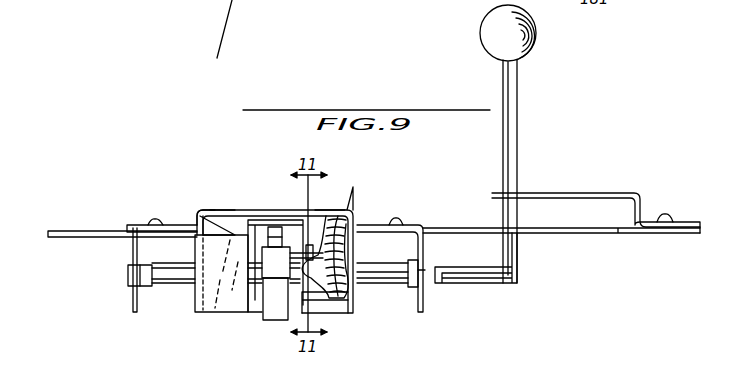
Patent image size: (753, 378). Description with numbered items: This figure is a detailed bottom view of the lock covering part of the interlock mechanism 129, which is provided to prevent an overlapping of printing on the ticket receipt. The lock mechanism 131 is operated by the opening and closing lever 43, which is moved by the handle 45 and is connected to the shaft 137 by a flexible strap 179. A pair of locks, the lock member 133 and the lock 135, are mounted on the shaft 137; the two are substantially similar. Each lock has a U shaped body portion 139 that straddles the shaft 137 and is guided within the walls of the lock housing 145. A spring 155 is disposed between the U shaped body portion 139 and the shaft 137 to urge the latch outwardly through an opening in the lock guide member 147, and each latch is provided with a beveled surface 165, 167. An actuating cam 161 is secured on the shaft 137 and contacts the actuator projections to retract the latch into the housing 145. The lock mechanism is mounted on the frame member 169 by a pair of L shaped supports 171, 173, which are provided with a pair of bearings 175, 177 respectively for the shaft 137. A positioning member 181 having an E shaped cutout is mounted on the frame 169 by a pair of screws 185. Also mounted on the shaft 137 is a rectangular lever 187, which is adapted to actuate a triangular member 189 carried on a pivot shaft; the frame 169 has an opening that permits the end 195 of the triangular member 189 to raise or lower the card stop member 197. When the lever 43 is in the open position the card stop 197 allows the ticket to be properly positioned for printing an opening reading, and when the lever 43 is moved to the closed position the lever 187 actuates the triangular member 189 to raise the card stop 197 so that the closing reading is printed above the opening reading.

The handle 45 is at (480, 28).
The opening and closing lever 43 is at (518, 80).
The positioning member 181 is at (607, 193).
The screws 185 is at (666, 214).
The L shaped support 173 is at (428, 246).
The flexible strap 179 is at (519, 262).
The bearing 177 is at (413, 290).
The shaft 137 is at (380, 288).
The bearing 175 is at (147, 290).
The L shaped support 171 is at (132, 252).
The frame member 169 is at (62, 230).
The lock mechanism 131 is at (185, 218).
The lock 135 is at (357, 209).
The lock guide member 147 is at (199, 212).
The beveled surface 165 is at (217, 211).
The beveled surface 167 is at (373, 130).
The spring 155 is at (358, 223).
The U shaped body portion 139 is at (348, 250).
The lock member 133 is at (224, 222).
The lock housing 145 is at (227, 305).
The triangular member 189 is at (290, 231).
The card stop member 197 is at (258, 227).
The end 195 is at (268, 237).
The actuating cam 161 is at (277, 262).
The rectangular lever 187 is at (273, 320).
The interlock mechanism 129 is at (460, 216).